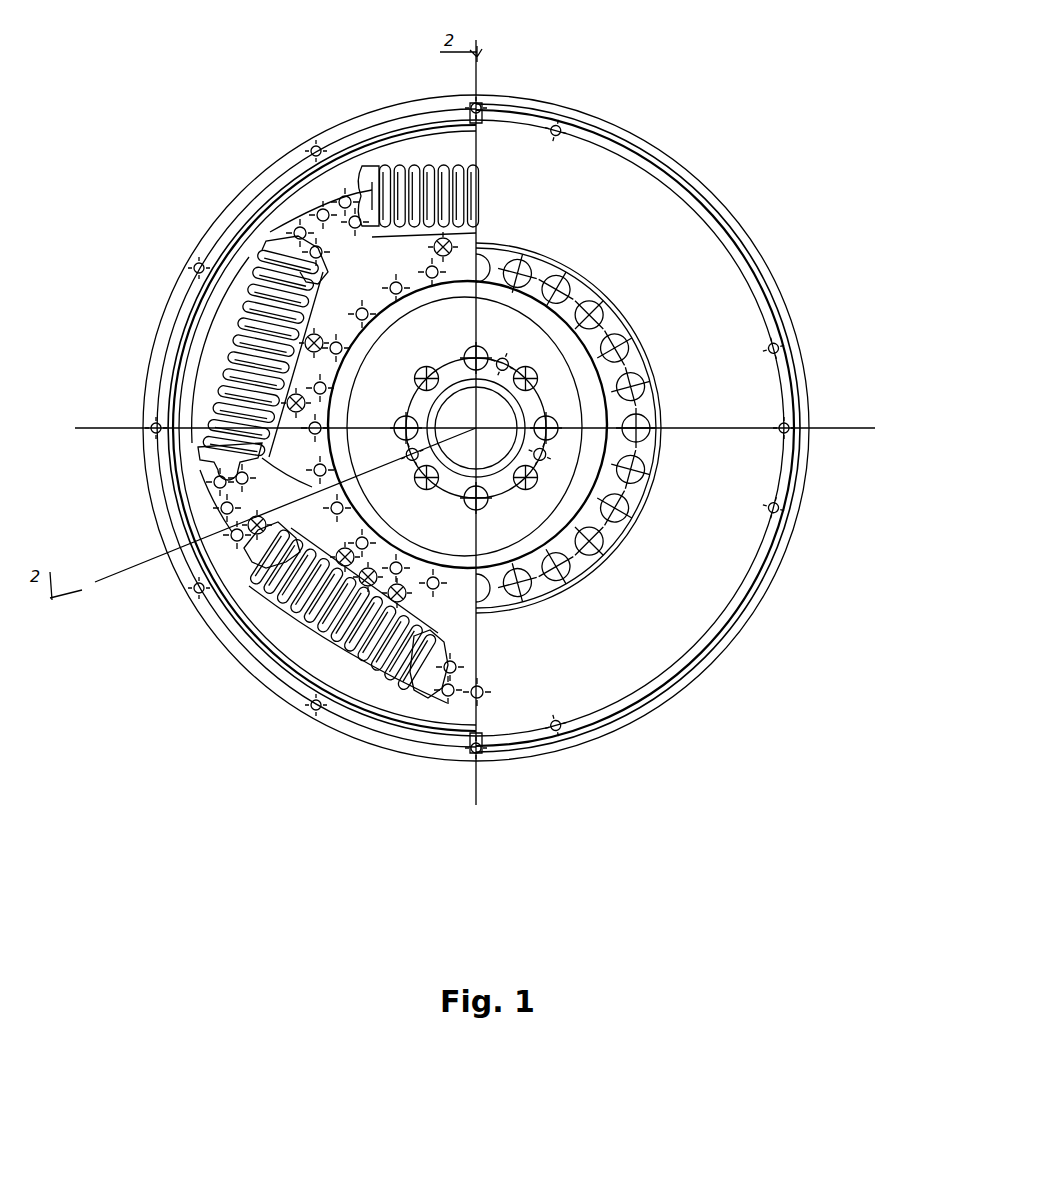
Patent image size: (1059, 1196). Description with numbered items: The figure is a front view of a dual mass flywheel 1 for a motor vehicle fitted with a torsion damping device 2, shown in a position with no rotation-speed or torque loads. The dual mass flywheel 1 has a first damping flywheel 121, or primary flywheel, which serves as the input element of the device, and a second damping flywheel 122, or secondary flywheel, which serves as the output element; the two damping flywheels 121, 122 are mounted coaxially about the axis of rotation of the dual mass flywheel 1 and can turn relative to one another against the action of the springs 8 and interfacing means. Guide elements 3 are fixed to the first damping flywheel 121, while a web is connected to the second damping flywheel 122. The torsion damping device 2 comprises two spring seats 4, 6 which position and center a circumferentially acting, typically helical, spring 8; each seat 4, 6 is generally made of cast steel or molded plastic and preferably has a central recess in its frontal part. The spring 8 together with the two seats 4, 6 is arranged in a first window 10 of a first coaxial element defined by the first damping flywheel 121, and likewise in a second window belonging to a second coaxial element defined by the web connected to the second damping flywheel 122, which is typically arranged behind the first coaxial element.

The dual mass flywheel 1 is at (236, 148).
The torsion damping device 2 is at (449, 163).
The guide elements 3 is at (213, 497).
The spring seat 4 is at (222, 455).
The spring seat 6 is at (249, 553).
The spring 8 is at (220, 376).
The first window 10 is at (340, 680).
The first damping flywheel 121 is at (617, 192).
The second damping flywheel 122 is at (447, 617).